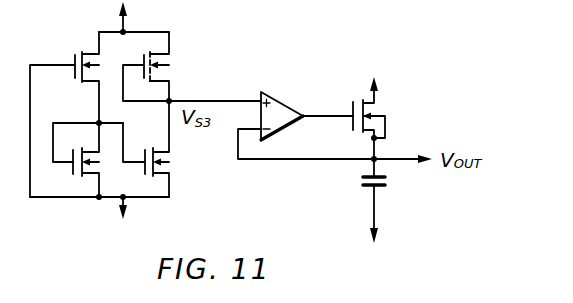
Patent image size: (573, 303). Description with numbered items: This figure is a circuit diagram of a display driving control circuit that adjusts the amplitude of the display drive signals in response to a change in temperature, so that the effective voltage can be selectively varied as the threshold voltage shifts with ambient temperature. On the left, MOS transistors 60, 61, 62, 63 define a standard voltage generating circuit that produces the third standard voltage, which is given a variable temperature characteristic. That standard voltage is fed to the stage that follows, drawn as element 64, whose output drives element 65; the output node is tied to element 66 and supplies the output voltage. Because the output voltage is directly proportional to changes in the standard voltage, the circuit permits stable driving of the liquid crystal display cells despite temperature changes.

The MOS transistor 60 is at (169, 59).
The MOS transistor 61 is at (99, 59).
The MOS transistor 62 is at (170, 167).
The MOS transistor 63 is at (98, 167).
The operational amplifier 64 is at (290, 111).
The output transistor 65 is at (381, 108).
The capacitor 66 is at (388, 181).